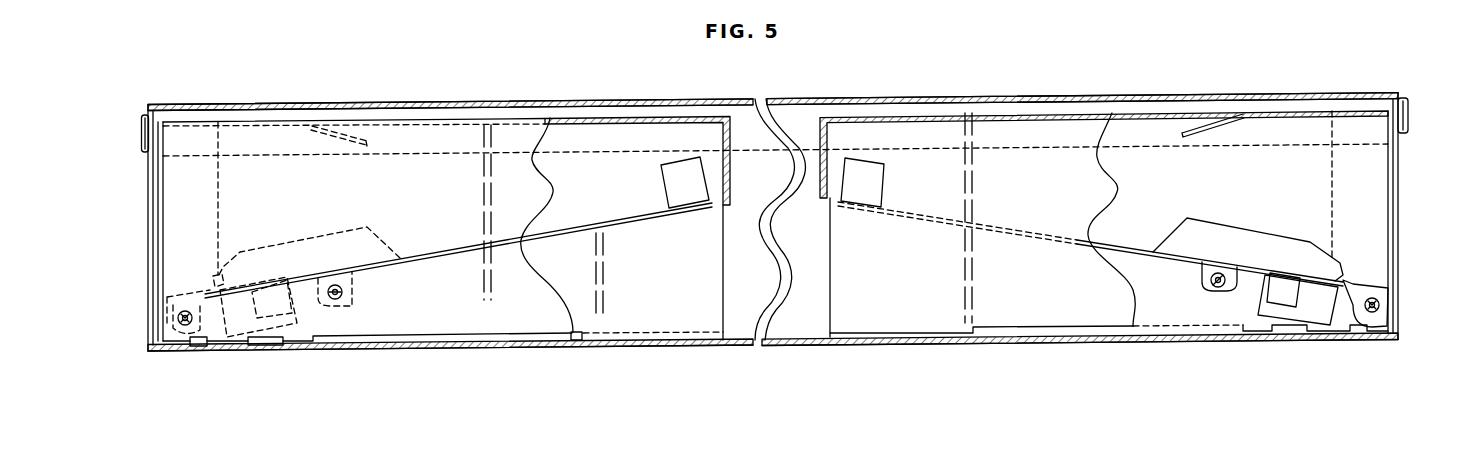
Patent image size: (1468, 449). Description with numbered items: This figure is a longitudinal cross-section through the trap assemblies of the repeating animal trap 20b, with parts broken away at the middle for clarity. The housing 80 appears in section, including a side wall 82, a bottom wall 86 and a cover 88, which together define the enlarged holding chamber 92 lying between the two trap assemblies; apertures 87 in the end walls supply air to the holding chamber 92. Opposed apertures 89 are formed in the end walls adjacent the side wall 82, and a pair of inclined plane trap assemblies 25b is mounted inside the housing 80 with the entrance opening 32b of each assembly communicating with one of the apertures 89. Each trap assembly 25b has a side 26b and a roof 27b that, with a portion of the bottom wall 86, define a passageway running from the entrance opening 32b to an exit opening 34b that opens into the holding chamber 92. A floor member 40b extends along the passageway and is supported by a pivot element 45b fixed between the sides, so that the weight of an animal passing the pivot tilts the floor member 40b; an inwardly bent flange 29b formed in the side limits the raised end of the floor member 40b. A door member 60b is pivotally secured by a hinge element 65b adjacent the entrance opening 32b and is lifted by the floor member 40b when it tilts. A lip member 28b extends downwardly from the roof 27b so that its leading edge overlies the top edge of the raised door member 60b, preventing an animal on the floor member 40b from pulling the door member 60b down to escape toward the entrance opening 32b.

The trap 20b is at (1147, 75).
The inclined plane trap assembly 25b is at (576, 117).
The side 26b is at (340, 122).
The roof 27b is at (647, 118).
The lip member 28b is at (1215, 113).
The inwardly bent flange 29b is at (683, 187).
The entrance opening 32b is at (156, 240).
The exit opening 34b is at (737, 262).
The floor member 40b is at (588, 218).
The pivot element 45b is at (353, 292).
The door member 60b is at (288, 250).
The hinge element 65b is at (197, 337).
The housing 80 is at (195, 96).
The side wall 82 is at (800, 328).
The bottom wall 86 is at (813, 344).
The apertures 87 is at (450, 52).
The cover 88 is at (1058, 95).
The opposed apertures 89 is at (145, 152).
The holding chamber 92 is at (790, 128).